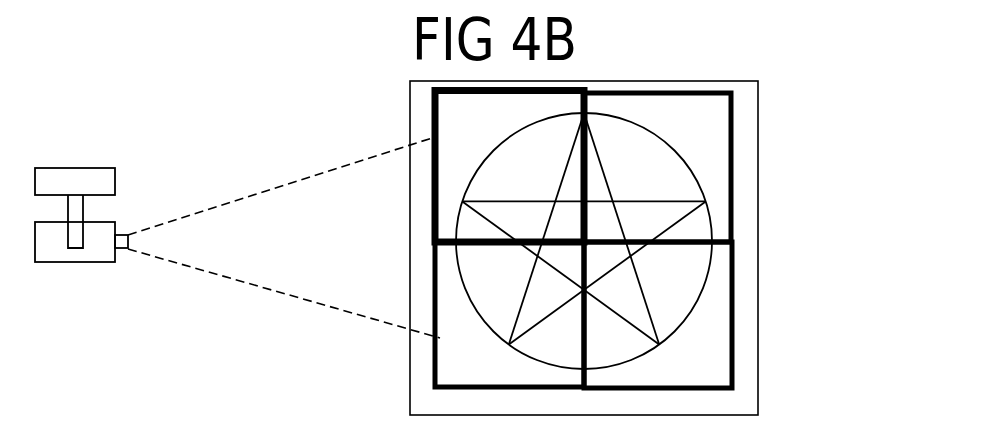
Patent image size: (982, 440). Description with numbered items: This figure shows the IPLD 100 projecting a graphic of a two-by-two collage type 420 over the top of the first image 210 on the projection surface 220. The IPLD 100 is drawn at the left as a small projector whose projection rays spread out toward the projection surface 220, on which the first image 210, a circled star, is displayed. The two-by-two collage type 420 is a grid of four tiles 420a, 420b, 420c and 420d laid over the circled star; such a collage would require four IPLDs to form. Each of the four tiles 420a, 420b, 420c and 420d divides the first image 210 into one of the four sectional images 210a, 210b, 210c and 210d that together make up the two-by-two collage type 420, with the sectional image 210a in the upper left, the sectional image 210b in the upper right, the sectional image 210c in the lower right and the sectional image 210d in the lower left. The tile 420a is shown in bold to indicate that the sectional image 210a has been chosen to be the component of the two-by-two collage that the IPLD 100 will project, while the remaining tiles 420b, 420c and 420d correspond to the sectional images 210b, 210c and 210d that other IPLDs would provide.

The IPLD 100 is at (90, 268).
The first image 210 is at (672, 196).
The sectional image 210a is at (549, 187).
The sectional image 210b is at (667, 187).
The sectional image 210c is at (697, 282).
The sectional image 210d is at (522, 284).
The projection surface 220 is at (770, 150).
The 2×2 collage type 420 is at (578, 250).
The tile 420a is at (422, 189).
The tile 420b is at (738, 181).
The tile 420c is at (740, 368).
The tile 420d is at (427, 370).